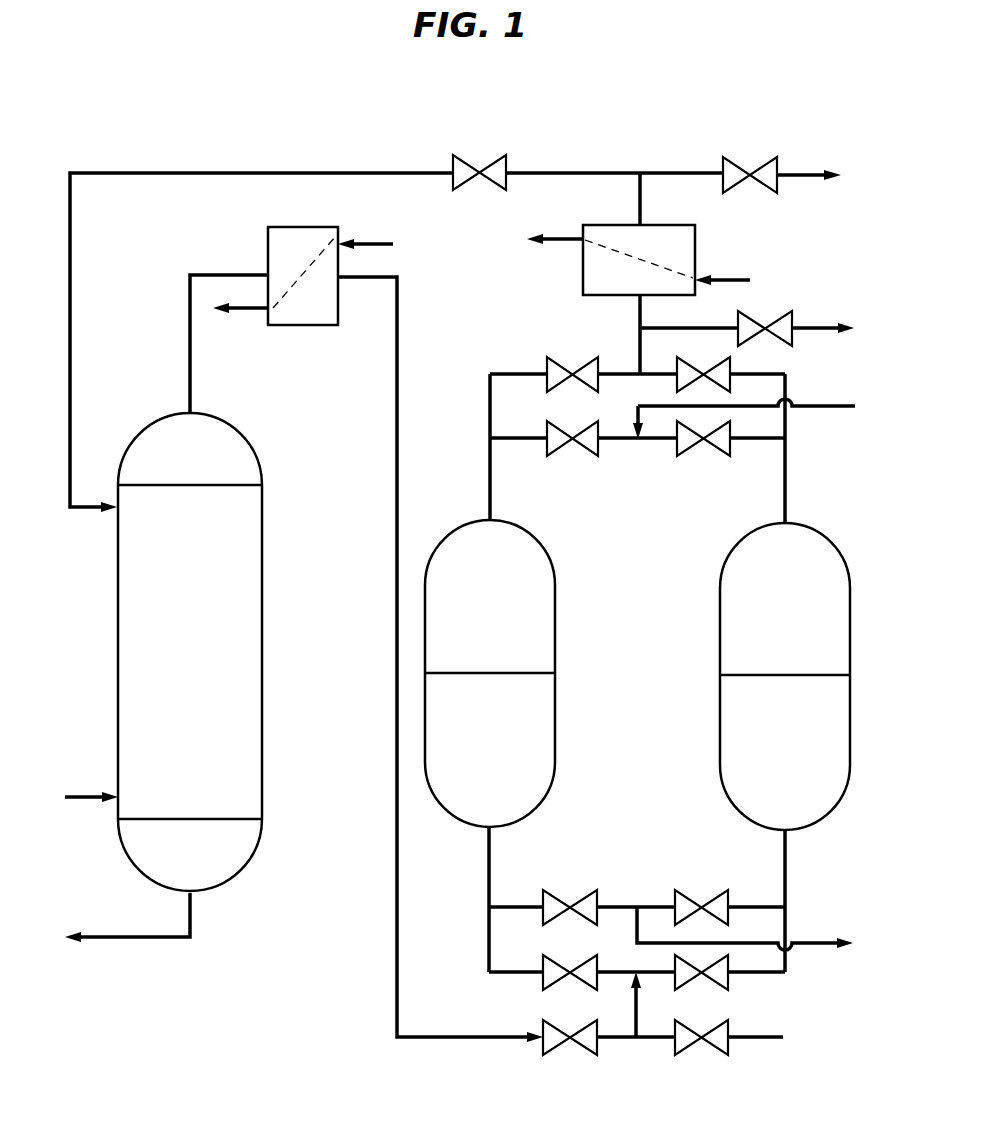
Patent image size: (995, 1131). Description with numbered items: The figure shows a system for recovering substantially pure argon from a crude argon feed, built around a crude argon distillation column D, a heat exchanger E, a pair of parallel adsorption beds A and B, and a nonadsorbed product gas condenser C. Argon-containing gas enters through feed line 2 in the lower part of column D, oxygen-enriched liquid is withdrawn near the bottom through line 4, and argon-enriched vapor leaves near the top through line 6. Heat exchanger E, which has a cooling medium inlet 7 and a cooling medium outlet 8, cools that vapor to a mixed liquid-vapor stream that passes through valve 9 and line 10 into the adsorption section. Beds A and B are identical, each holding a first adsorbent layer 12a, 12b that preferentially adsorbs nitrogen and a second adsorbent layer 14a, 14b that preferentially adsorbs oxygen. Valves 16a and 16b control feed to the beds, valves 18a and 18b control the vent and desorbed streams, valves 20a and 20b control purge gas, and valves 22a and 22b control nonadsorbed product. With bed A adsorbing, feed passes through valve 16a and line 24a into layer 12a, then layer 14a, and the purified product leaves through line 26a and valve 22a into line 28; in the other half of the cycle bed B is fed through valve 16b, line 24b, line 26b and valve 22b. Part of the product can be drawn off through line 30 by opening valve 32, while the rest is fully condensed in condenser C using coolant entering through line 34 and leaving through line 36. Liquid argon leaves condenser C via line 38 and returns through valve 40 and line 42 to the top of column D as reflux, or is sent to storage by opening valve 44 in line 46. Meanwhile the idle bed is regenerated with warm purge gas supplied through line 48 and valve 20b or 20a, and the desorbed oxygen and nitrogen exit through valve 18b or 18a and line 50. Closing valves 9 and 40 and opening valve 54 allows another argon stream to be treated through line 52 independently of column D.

The feed line 2 is at (80, 795).
The line 4 is at (115, 935).
The line 6 is at (190, 382).
The cooling medium inlet 7 is at (370, 240).
The cooling medium outlet 8 is at (238, 312).
The valve 9 is at (543, 1045).
The line 10 is at (632, 1017).
The first layer of adsorbent 12a is at (490, 750).
The first layer of adsorbent 12b is at (785, 752).
The second layer of adsorbent 14a is at (490, 596).
The second layer of adsorbent 14b is at (785, 599).
The valve 16a is at (543, 980).
The valve 16b is at (728, 985).
The valve 18a is at (543, 895).
The valve 18b is at (675, 895).
The valve 20a is at (547, 428).
The valve 20b is at (677, 448).
The valve 22a is at (547, 365).
The valve 22b is at (733, 367).
The line 24a is at (488, 955).
The line 24b is at (786, 965).
The line 26a is at (490, 428).
The line 26b is at (788, 432).
The line 28 is at (640, 345).
The line 30 is at (815, 330).
The valve 32 is at (795, 315).
The line 34 is at (725, 273).
The line 36 is at (556, 230).
The line 38 is at (641, 200).
The valve 40 is at (512, 160).
The line 42 is at (70, 300).
The valve 44 is at (745, 160).
The line 46 is at (795, 173).
The line 48 is at (855, 403).
The line 50 is at (812, 943).
The line 52 is at (770, 1040).
The valve 54 is at (728, 1048).
The adsorption bed A is at (518, 673).
The adsorption bed B is at (761, 676).
The nonadsorbed product gas condenser C is at (697, 242).
The crude argon distillation column D is at (190, 652).
The heat exchanger E is at (290, 276).